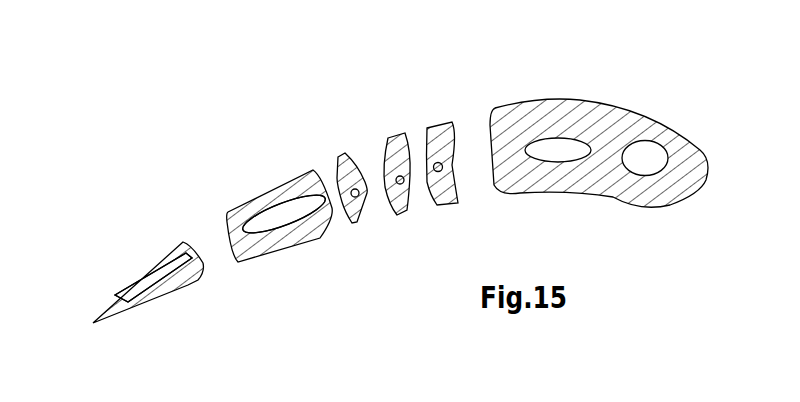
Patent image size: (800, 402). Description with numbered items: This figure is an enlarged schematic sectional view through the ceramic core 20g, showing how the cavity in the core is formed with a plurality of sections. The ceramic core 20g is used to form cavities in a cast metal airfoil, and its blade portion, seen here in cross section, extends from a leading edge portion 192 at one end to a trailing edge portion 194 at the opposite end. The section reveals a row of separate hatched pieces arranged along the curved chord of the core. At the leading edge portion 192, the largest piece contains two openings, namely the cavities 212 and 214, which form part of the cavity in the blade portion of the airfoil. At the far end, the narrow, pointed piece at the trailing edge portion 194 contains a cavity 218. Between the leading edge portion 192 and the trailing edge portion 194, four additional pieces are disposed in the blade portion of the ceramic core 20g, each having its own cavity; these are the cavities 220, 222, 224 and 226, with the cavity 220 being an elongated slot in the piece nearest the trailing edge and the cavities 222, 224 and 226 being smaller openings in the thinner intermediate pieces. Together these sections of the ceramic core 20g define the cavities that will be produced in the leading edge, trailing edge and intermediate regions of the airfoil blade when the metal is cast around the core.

The ceramic core 20g is at (641, 95).
The leading edge portion 192 is at (705, 147).
The trailing edge portion 194 is at (213, 247).
The cavity 212 is at (652, 165).
The cavity 214 is at (555, 152).
The cavity 218 is at (168, 280).
The cavity 220 is at (292, 212).
The cavity 222 is at (356, 168).
The cavity 224 is at (402, 187).
The cavity 226 is at (442, 170).